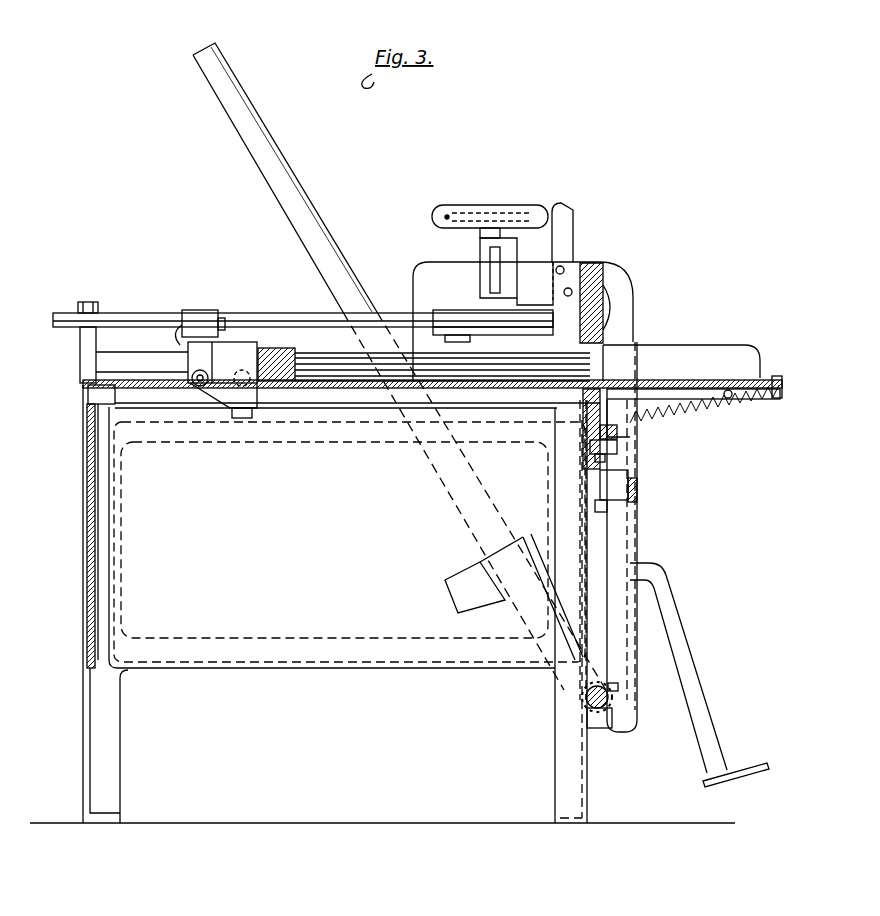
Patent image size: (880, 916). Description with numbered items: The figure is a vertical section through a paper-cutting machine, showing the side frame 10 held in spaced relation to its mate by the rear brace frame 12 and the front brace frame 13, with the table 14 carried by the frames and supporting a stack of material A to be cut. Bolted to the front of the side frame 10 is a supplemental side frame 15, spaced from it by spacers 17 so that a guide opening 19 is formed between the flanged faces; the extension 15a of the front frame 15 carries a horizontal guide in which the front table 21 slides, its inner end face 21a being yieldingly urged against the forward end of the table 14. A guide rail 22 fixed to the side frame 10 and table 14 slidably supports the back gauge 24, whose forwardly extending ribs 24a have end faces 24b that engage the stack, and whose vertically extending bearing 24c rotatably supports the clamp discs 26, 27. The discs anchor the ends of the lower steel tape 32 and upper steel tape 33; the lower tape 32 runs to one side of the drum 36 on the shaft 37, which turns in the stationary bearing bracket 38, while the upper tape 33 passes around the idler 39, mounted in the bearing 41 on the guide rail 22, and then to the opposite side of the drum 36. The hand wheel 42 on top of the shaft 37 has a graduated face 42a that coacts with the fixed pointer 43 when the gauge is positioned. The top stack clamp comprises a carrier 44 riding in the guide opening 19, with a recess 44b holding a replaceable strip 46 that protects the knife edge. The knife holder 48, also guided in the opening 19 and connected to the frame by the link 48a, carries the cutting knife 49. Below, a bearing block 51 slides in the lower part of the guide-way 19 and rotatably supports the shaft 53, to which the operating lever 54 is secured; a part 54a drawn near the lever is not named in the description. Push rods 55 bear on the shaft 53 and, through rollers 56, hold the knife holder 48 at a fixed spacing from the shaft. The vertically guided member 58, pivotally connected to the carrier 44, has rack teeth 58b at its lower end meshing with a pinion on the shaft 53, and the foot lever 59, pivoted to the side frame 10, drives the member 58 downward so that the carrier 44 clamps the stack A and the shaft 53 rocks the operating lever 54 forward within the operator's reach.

The side frame 10 is at (555, 795).
The rear brace frame 12 is at (90, 594).
The front brace frame 13 is at (637, 500).
The table 14 is at (88, 393).
The supplemental side frame 15 is at (636, 320).
The extension 15a is at (732, 350).
The spacer 17 is at (585, 290).
The guide opening 19 is at (585, 532).
The front table 21 is at (773, 400).
The inner end face 21a is at (590, 400).
The guide rail 22 is at (140, 348).
The back gauge 24 is at (234, 342).
The forwardly extending rib 24a is at (280, 348).
The end face 24b is at (297, 385).
The vertically extending bearing 24c is at (198, 372).
The clamp disc 26 is at (178, 326).
The clamp disc 27 is at (210, 310).
The lower steel tape 32 is at (305, 350).
The upper steel tape 33 is at (162, 300).
The drum 36 is at (452, 310).
The shaft 37 is at (490, 257).
The bearing bracket 38 is at (515, 265).
The idler 39 is at (62, 327).
The bearing 41 is at (85, 364).
The hand wheel 42 is at (445, 228).
The face 42a is at (447, 212).
The fixed pointer 43 is at (573, 228).
The carrier 44 is at (560, 322).
The recess 44b is at (585, 345).
The strip of replaceable material 46 is at (592, 376).
The knife holder 48 is at (617, 433).
The link 48a is at (637, 490).
The cutting knife 49 is at (583, 428).
The bearing block 51 is at (603, 730).
The shaft 53 is at (585, 697).
The operating lever 54 is at (482, 516).
The arm bracket 54a is at (445, 580).
The push rod 55 is at (608, 492).
The rotatable roller 56 is at (615, 462).
The vertically guided member 58 is at (565, 335).
The rack teeth 58b is at (612, 688).
The foot lever 59 is at (714, 718).
The material A is at (360, 383).